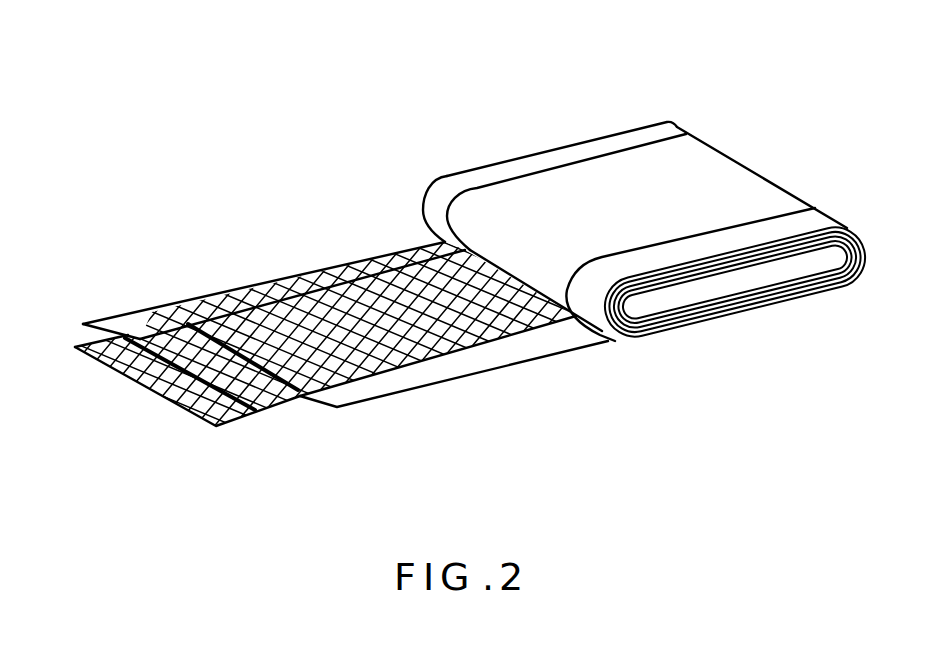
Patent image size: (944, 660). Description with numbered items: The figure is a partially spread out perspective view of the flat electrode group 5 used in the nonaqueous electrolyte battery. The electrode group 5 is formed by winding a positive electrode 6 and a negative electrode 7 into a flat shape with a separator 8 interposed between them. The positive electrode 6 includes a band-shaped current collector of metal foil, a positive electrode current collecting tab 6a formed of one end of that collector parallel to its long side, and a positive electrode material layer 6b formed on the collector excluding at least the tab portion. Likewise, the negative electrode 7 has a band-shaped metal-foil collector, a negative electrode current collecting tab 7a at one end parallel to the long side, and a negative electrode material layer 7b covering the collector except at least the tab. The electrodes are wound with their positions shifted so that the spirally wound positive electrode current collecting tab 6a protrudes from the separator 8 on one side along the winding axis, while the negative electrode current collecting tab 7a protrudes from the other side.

The electrode group 5 is at (647, 197).
The positive electrode 6 is at (273, 279).
The positive electrode current collecting tab 6a is at (613, 143).
The positive electrode material layer 6b is at (143, 343).
The negative electrode 7 is at (323, 330).
The negative electrode current collecting tab 7a is at (806, 221).
The negative electrode material layer 7b is at (415, 352).
The separator 8 is at (295, 404).